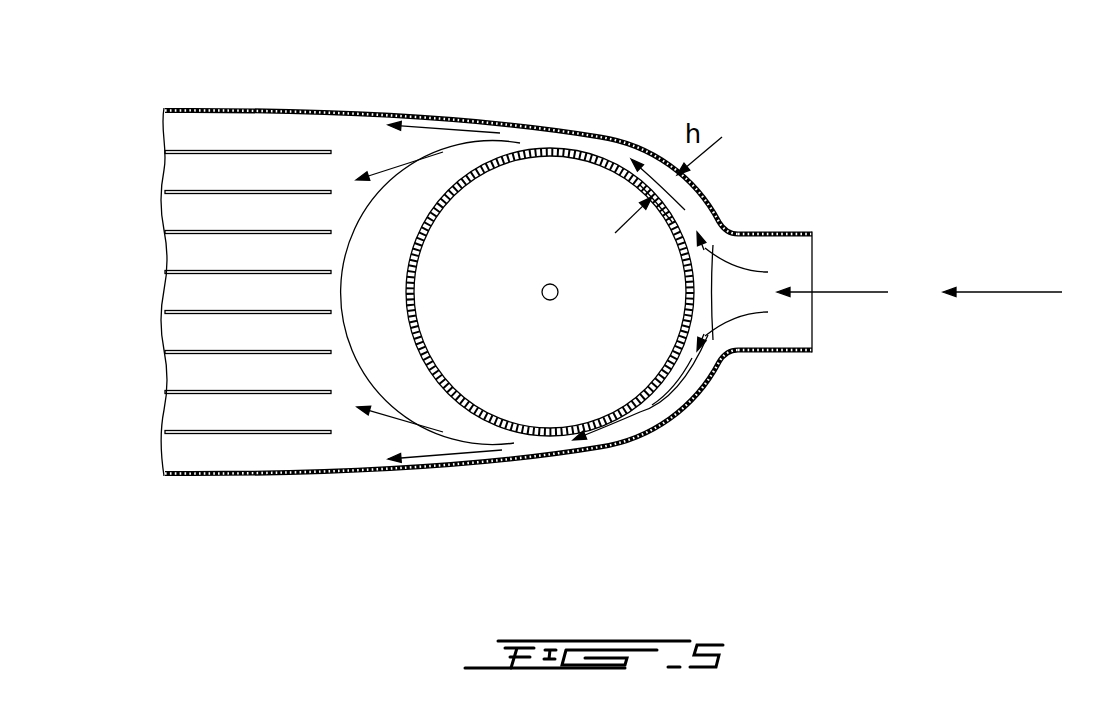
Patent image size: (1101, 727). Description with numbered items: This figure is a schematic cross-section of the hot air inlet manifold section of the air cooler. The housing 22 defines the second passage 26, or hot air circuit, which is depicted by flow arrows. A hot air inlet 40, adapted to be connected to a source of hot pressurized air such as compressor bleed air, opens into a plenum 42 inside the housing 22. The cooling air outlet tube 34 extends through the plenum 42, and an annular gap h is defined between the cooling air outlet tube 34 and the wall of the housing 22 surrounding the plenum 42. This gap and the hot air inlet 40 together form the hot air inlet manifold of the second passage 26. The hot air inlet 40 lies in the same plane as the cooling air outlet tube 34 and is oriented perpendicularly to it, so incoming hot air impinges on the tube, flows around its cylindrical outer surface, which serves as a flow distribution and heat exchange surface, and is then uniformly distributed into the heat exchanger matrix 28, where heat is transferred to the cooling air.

The housing 22 is at (630, 143).
The second passage 26 is at (440, 128).
The heat exchanger matrix 28 is at (175, 292).
The cooling air outlet tube 34 is at (565, 155).
The hot air inlet 40 is at (782, 333).
The plenum 42 is at (352, 288).